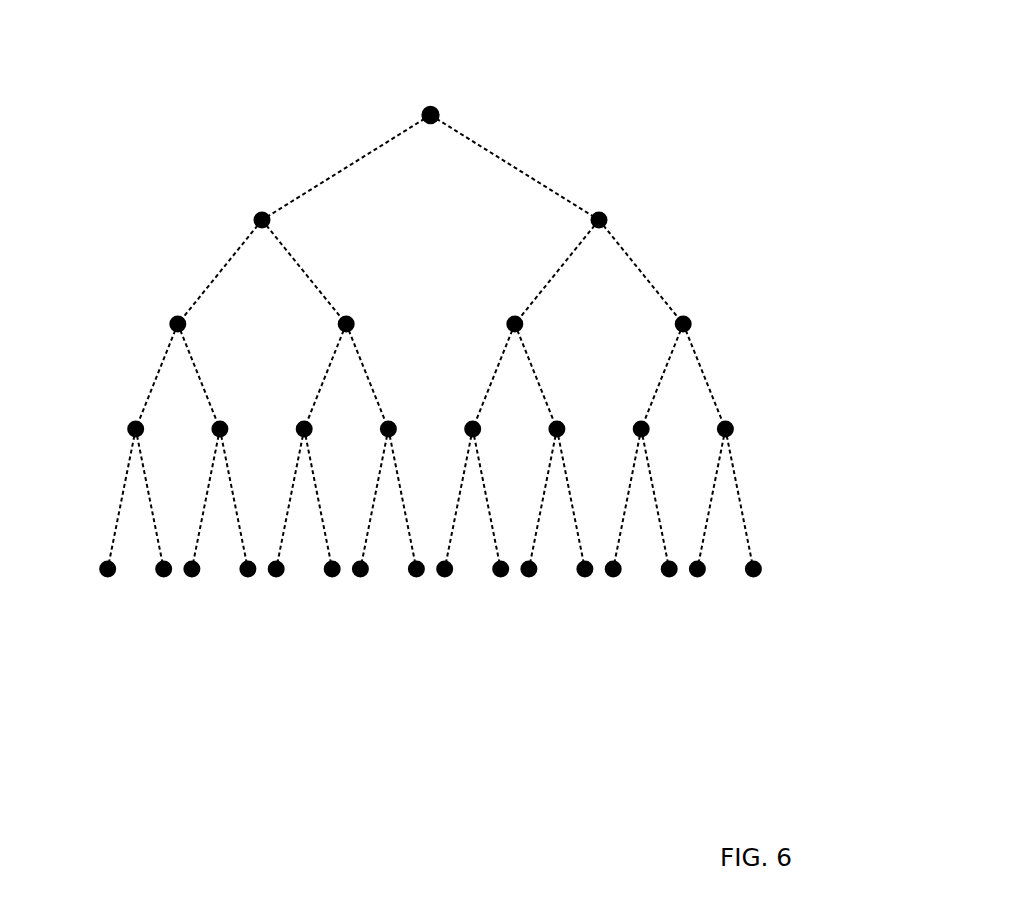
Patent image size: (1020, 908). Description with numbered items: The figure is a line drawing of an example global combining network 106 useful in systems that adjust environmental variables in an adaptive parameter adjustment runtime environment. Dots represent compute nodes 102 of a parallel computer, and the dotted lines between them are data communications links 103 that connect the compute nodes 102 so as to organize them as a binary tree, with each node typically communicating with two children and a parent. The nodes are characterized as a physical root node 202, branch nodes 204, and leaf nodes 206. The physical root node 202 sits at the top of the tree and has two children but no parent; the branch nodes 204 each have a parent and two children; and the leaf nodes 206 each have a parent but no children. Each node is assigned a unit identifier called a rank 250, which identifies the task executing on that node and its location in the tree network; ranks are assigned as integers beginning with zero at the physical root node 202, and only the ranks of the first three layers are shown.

The global combining network 106 is at (288, 793).
The data communications links 103 is at (355, 162).
The physical root node 202 is at (555, 88).
The branch nodes 204 is at (775, 173).
The leaf nodes 206 is at (775, 603).
The rank 250 is at (565, 228).
The compute nodes 102 is at (500, 578).